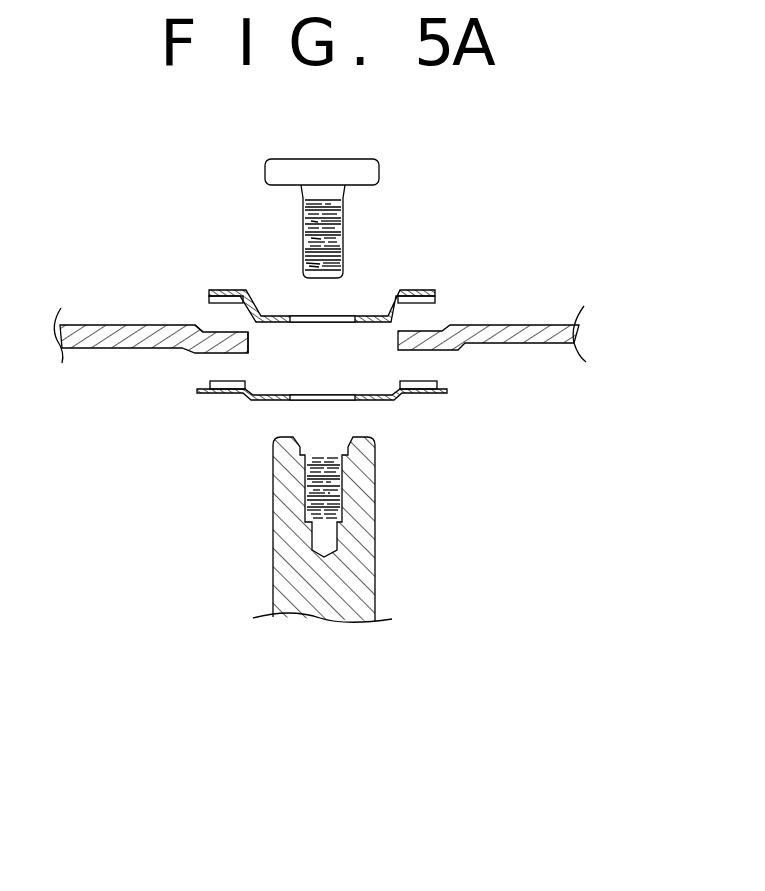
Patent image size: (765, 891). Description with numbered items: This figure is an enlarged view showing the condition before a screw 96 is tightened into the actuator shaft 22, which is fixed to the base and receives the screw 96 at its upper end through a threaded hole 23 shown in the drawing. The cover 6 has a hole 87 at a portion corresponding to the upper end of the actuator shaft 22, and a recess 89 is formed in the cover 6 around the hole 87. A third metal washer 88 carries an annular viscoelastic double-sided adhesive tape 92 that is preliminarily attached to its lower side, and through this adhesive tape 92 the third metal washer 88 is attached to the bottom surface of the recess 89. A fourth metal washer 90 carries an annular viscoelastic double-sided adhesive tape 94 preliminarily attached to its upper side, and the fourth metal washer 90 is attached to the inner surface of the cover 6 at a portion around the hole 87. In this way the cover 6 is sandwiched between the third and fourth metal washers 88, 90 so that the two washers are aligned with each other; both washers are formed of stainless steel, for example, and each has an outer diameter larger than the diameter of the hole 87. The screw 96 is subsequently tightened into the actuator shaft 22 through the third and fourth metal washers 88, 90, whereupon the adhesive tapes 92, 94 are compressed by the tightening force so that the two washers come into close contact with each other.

The screw 96 is at (322, 159).
The third metal washer 88 is at (416, 290).
The annular viscoelastic double-sided adhesive tape 92 is at (430, 303).
The cover 6 is at (103, 325).
The recess 89 is at (203, 330).
The hole 87 is at (249, 337).
The fourth metal washer 90 is at (422, 394).
The annular viscoelastic double-sided adhesive tape 94 is at (425, 383).
The actuator shaft 22 is at (366, 593).
The threaded hole 23 is at (308, 495).